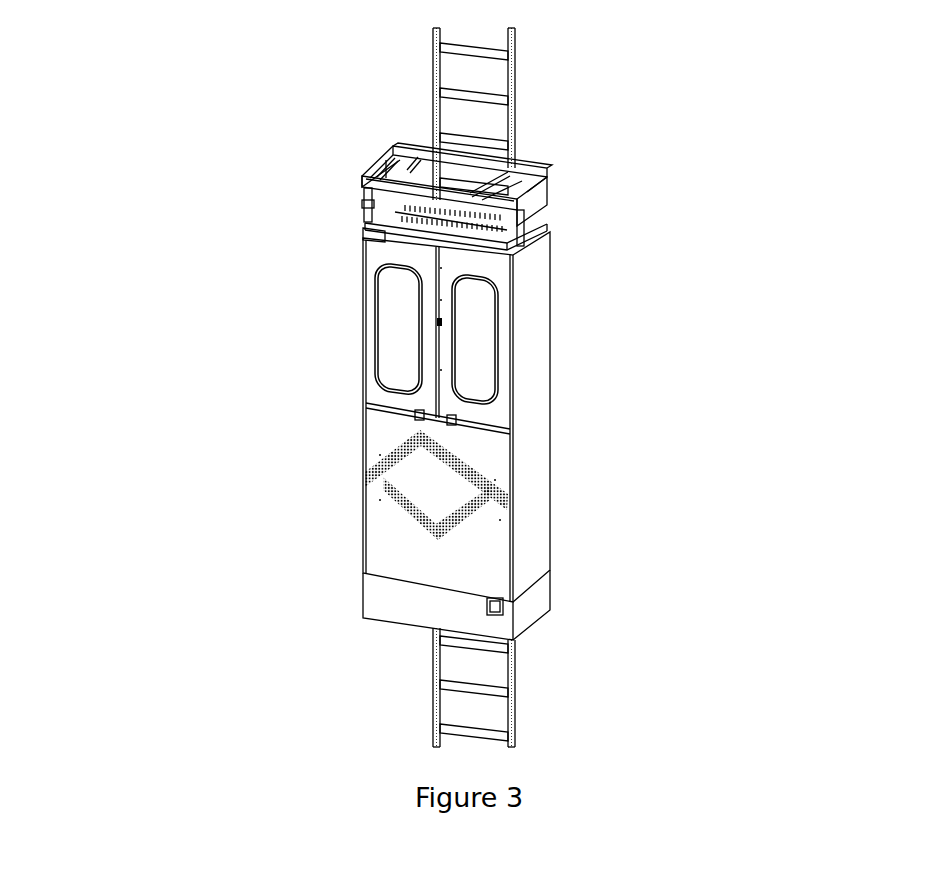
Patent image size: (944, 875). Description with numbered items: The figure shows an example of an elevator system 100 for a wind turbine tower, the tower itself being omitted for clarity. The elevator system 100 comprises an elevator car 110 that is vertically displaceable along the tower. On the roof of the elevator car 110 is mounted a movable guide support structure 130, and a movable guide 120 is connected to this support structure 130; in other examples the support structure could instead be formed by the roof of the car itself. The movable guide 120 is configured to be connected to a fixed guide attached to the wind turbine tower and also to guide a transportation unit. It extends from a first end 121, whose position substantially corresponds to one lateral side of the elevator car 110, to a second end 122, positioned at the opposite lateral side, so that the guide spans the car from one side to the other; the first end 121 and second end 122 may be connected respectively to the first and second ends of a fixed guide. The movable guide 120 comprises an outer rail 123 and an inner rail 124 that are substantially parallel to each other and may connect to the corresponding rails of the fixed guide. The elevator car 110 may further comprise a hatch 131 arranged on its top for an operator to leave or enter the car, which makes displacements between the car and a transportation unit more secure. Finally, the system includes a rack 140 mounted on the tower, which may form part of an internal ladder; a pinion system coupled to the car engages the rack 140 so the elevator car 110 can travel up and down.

The elevator system 100 is at (230, 111).
The elevator car 110 is at (535, 447).
The movable guide 120 is at (540, 152).
The first end 121 is at (393, 150).
The second end 122 is at (545, 175).
The outer rail 123 is at (463, 160).
The inner rail 124 is at (460, 245).
The movable guide support structure 130 is at (377, 212).
The hatch 131 is at (380, 240).
The rack 140 is at (435, 670).